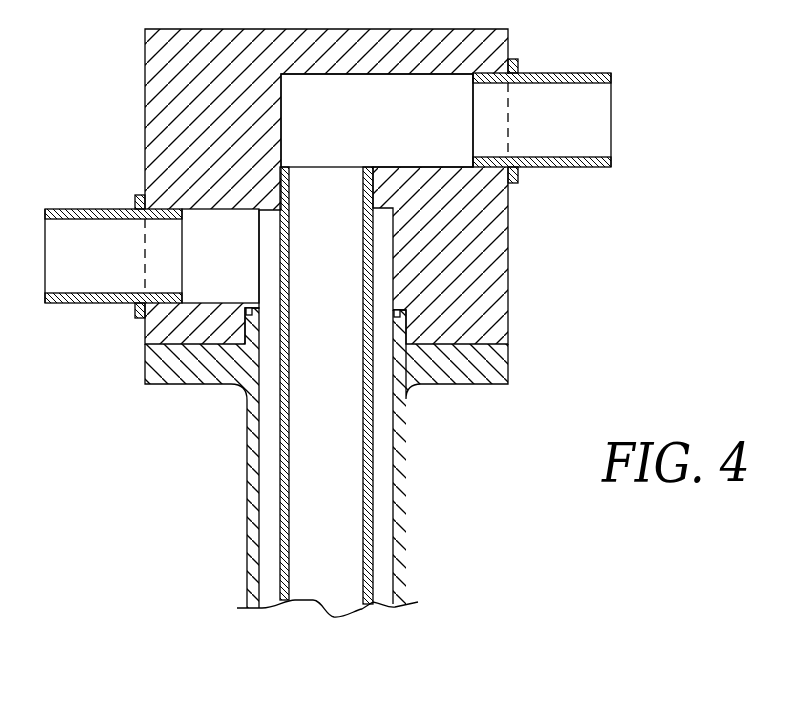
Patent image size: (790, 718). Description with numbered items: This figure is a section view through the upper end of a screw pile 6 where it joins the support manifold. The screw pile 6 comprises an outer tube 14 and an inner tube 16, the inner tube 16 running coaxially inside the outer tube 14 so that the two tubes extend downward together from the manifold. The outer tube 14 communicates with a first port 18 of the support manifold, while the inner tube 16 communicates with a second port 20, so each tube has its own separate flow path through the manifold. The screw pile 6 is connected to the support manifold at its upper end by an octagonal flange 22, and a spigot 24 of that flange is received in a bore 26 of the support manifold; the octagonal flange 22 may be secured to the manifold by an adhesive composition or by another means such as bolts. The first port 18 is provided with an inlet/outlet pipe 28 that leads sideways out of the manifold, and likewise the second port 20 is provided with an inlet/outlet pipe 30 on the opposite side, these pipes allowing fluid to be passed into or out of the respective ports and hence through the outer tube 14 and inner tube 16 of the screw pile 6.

The screw pile 6 is at (294, 387).
The outer tube 14 is at (252, 527).
The inner tube 16 is at (342, 516).
The first port 18 is at (242, 264).
The second port 20 is at (390, 128).
The octagonal flange 22 is at (145, 374).
The spigot 24 is at (407, 313).
The bore 26 is at (248, 315).
The inlet/outlet pipe 28 is at (73, 208).
The inlet/outlet pipe 30 is at (560, 73).